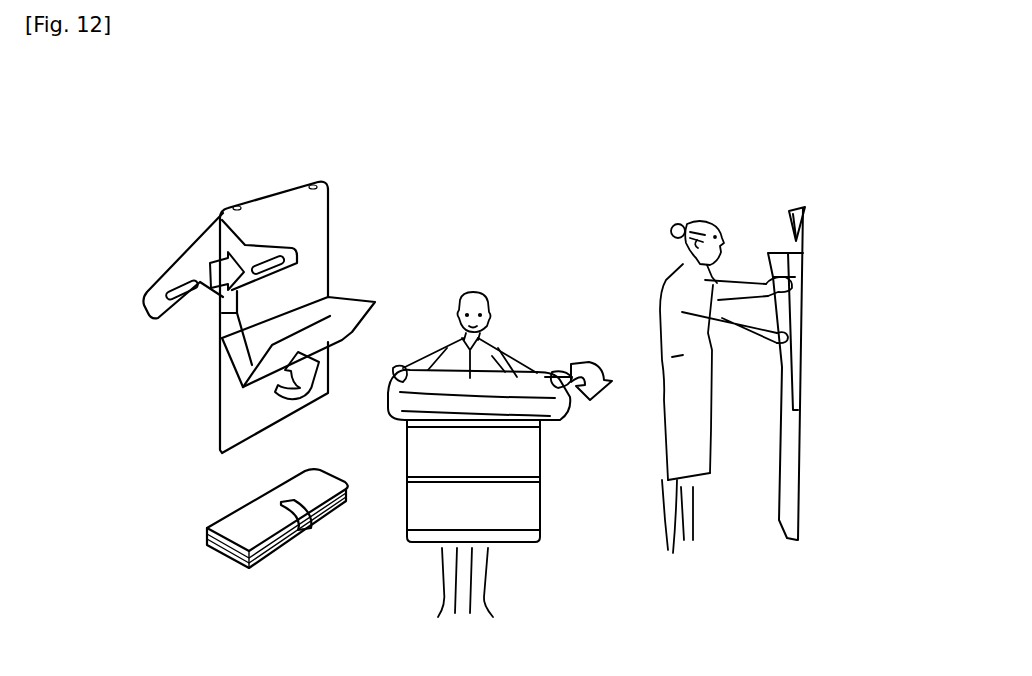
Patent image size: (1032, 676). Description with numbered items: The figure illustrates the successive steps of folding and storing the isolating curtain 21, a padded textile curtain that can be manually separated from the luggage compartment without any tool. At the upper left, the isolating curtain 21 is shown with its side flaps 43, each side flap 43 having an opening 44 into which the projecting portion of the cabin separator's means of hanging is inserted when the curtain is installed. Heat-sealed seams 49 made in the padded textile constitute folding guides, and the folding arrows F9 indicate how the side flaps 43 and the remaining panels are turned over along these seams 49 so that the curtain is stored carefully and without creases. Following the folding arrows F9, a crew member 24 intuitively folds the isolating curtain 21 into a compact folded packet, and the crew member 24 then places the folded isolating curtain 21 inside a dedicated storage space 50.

The isolating curtain 21 is at (253, 226).
The crew member 24 is at (492, 357).
The side flap 43 is at (265, 253).
The opening 44 is at (298, 245).
The heat-sealed seams 49 is at (298, 308).
The dedicated storage space 50 is at (794, 236).
The folding arrows F9 is at (218, 272).